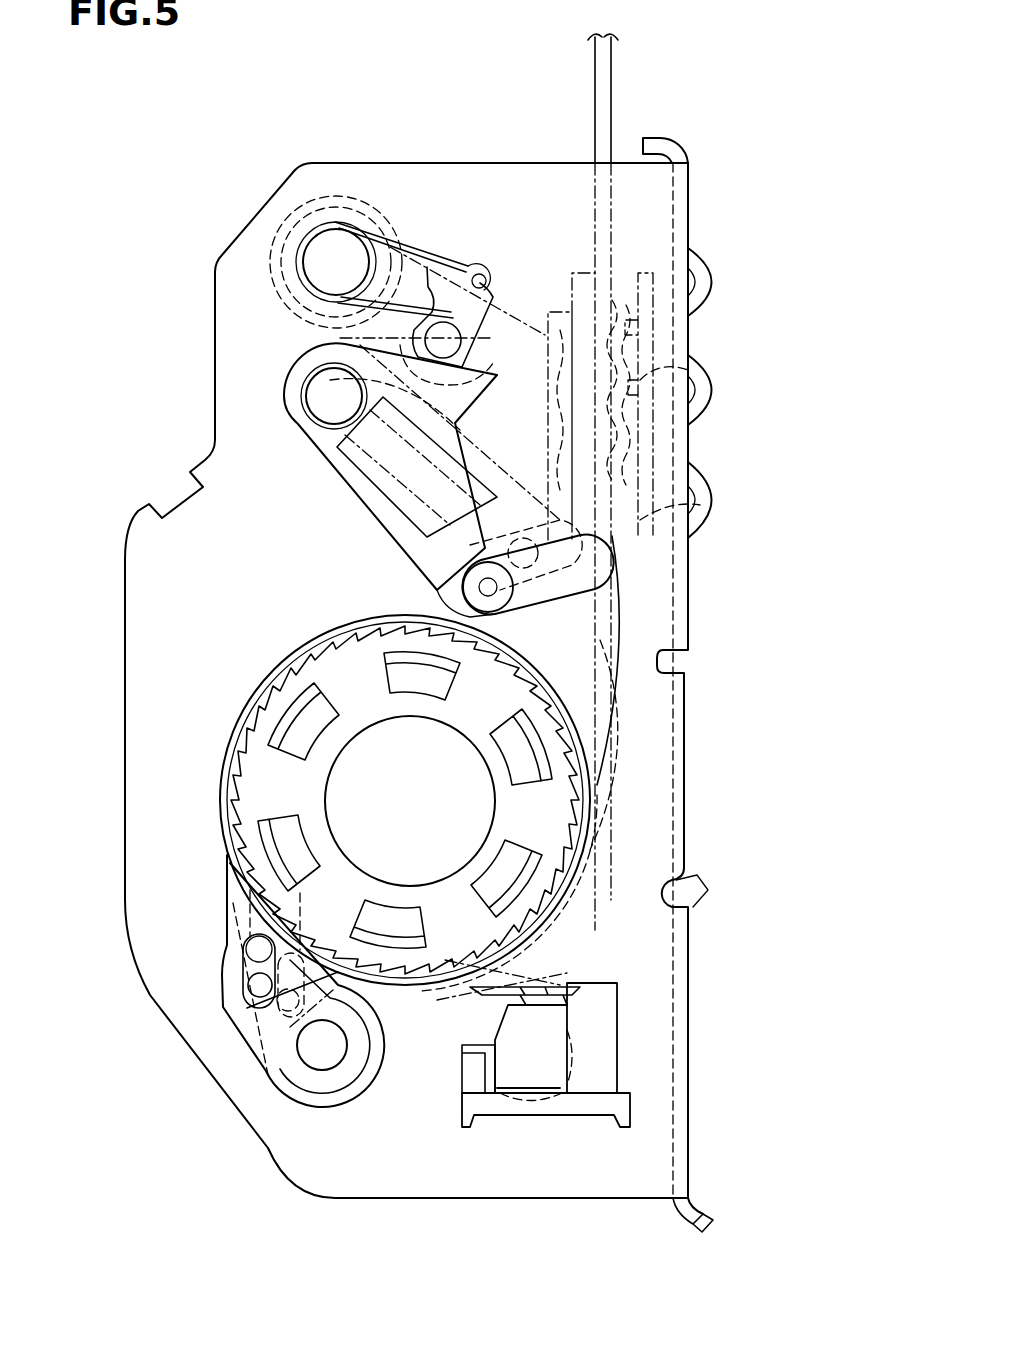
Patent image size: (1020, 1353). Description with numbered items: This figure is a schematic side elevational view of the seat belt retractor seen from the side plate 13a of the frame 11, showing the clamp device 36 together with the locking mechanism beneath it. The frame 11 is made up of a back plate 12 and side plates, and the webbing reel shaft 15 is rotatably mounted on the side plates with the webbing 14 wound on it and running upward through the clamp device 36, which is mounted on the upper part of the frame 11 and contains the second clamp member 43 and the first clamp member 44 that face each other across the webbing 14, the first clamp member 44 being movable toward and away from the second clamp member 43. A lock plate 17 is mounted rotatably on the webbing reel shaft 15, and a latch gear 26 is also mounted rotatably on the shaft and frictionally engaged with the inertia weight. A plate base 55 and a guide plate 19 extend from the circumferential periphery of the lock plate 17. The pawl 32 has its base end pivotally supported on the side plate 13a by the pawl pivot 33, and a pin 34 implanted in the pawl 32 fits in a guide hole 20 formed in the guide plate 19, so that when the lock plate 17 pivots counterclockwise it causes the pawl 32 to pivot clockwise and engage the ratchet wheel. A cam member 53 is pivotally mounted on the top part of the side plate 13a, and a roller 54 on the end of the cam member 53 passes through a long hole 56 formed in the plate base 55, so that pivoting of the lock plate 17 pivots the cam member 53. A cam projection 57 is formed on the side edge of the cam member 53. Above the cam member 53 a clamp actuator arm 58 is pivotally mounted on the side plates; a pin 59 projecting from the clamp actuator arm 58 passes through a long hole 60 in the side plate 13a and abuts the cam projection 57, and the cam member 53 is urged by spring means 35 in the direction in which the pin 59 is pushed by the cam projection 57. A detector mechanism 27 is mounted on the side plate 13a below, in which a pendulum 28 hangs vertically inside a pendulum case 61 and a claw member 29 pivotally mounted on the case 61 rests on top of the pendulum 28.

The frame 11 is at (175, 418).
The back plate 12 is at (690, 625).
The side plate 13a is at (180, 657).
The webbing 14 is at (608, 72).
The webbing reel shaft 15 is at (375, 803).
The lock plate 17 is at (280, 632).
The guide plate 19 is at (243, 953).
The guide hole 20 is at (259, 987).
The latch gear 26 is at (545, 830).
The detector mechanism 27 is at (660, 1000).
The pendulum 28 is at (528, 1077).
The claw member 29 is at (490, 992).
The pawl 32 is at (243, 1023).
The pawl pivot 33 is at (337, 1047).
The pin 34 is at (248, 1008).
The spring means 35 is at (420, 248).
The clamp device 36 is at (668, 350).
The second clamp member 43 is at (640, 400).
The first clamp member 44 is at (700, 500).
The cam member 53 is at (362, 480).
The roller 54 is at (455, 598).
The plate base 55 is at (587, 707).
The long hole 56 is at (558, 603).
The cam projection 57 is at (430, 403).
The clamp actuator arm 58 is at (421, 265).
The pin 59 is at (463, 337).
The long hole 60 is at (484, 282).
The pendulum case 61 is at (605, 1075).